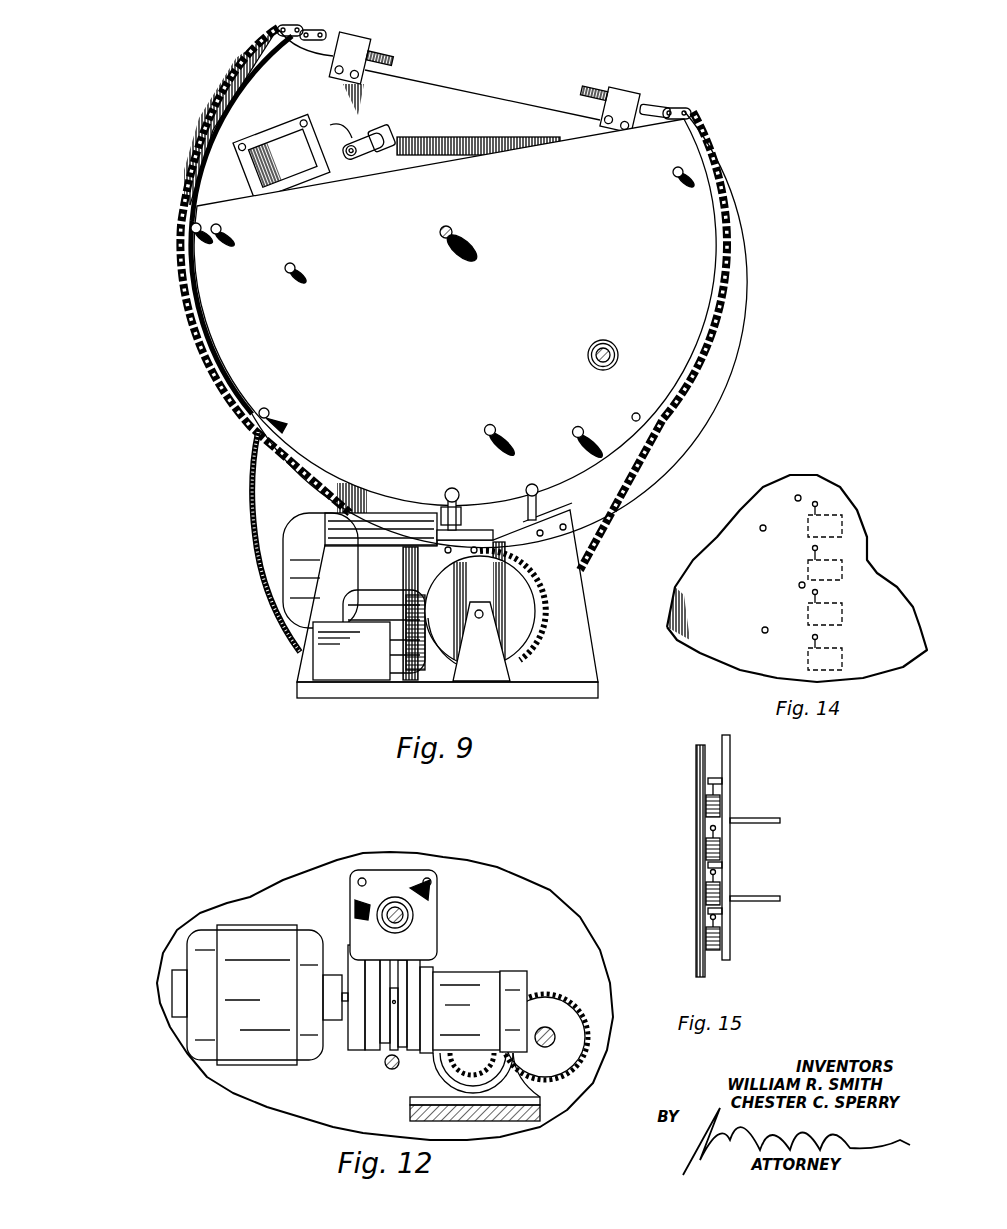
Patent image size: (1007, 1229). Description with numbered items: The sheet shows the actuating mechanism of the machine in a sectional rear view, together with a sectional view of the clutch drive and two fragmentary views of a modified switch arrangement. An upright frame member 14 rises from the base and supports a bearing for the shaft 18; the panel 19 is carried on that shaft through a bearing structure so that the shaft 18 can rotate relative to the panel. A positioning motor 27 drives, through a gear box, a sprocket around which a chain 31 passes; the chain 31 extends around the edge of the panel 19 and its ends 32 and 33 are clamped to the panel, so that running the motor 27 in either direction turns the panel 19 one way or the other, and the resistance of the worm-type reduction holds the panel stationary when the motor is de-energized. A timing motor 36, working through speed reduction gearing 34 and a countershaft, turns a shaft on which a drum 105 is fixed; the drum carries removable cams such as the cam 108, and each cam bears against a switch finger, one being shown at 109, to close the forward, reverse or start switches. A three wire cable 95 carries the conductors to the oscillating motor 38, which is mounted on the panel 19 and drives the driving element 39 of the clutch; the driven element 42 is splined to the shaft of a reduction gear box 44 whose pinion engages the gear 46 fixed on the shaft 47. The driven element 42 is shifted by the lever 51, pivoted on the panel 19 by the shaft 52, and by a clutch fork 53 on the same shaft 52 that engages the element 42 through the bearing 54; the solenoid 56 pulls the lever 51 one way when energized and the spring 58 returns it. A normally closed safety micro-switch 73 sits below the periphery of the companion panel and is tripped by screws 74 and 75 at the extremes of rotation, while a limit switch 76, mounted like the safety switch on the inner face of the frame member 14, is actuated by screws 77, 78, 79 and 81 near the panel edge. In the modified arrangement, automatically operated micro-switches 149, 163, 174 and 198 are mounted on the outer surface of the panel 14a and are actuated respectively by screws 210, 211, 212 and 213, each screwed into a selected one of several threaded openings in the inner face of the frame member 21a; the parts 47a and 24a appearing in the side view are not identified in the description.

In FIG. 9, the frame member 14 is at (563, 578).
In FIG. 15, the panel 14a is at (700, 955).
In FIG. 9, the shaft 18 is at (456, 232).
In FIG. 12, the shaft 18 is at (392, 908).
In FIG. 9, the panel 19 is at (422, 92).
In FIG. 14, the frame member 21a is at (755, 663).
In FIG. 15, the frame member 21a is at (730, 950).
In FIG. 15, the arm 24a is at (762, 898).
In FIG. 9, the positioning motor 27 is at (325, 514).
In FIG. 9, the chain 31 is at (650, 453).
In FIG. 9, the end of chain 32 is at (380, 48).
In FIG. 9, the end of chain 33 is at (596, 96).
In FIG. 9, the speed reduction gearing 34 is at (545, 617).
In FIG. 9, the timing motor 36 is at (382, 590).
In FIG. 12, the oscillating motor 38 is at (248, 1062).
In FIG. 12, the driving element 39 is at (357, 1052).
In FIG. 12, the driven element 42 is at (410, 1052).
In FIG. 12, the reduction gear box 44 is at (470, 975).
In FIG. 12, the gear 46 is at (556, 1005).
In FIG. 9, the shaft 47 is at (615, 345).
In FIG. 15, the arm 47a is at (762, 820).
In FIG. 9, the lever 51 is at (385, 133).
In FIG. 12, the shaft 52 is at (392, 1070).
In FIG. 12, the clutch fork 53 is at (386, 1052).
In FIG. 12, the bearing 54 is at (418, 963).
In FIG. 9, the solenoid 56 is at (254, 132).
In FIG. 9, the spring 58 is at (490, 137).
In FIG. 9, the safety switch 73 is at (560, 521).
In FIG. 9, the screw 74 is at (705, 360).
In FIG. 9, the screw 75 is at (190, 322).
In FIG. 9, the limit switch 76 is at (472, 530).
In FIG. 9, the screw 77 is at (446, 496).
In FIG. 9, the screw 78 is at (270, 414).
In FIG. 9, the screw 79 is at (641, 414).
In FIG. 9, the screw 81 is at (198, 224).
In FIG. 9, the three wire cable 95 is at (255, 474).
In FIG. 9, the drum 105 is at (520, 630).
In FIG. 9, the cam 108 is at (452, 668).
In FIG. 9, the switch finger 109 is at (418, 646).
In FIG. 14, the automatically operated switch 149 is at (842, 522).
In FIG. 15, the automatically operated switch 149 is at (706, 803).
In FIG. 14, the automatically operated switch 163 is at (842, 565).
In FIG. 15, the automatically operated switch 163 is at (706, 845).
In FIG. 14, the automatically operated switch 174 is at (842, 612).
In FIG. 15, the automatically operated switch 174 is at (706, 890).
In FIG. 14, the automatically operated switch 198 is at (842, 658).
In FIG. 15, the automatically operated switch 198 is at (706, 940).
In FIG. 14, the screw 210 is at (803, 495).
In FIG. 15, the screw 210 is at (715, 780).
In FIG. 14, the screw 211 is at (760, 532).
In FIG. 15, the screw 211 is at (722, 805).
In FIG. 14, the screw 212 is at (797, 585).
In FIG. 15, the screw 212 is at (722, 865).
In FIG. 14, the screw 213 is at (760, 627).
In FIG. 15, the screw 213 is at (722, 912).